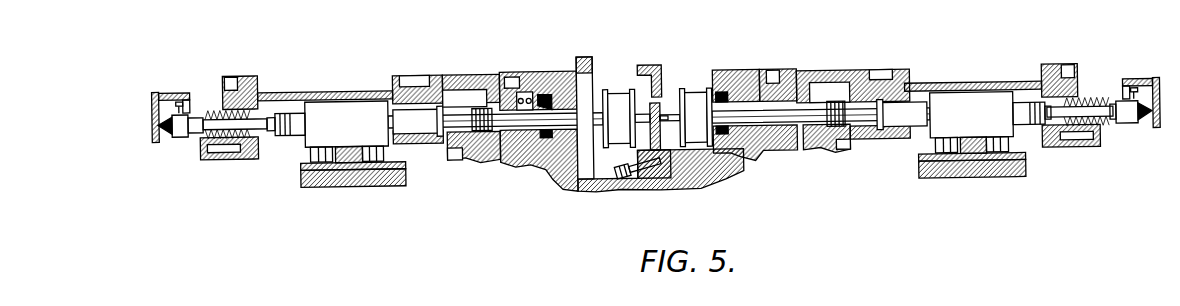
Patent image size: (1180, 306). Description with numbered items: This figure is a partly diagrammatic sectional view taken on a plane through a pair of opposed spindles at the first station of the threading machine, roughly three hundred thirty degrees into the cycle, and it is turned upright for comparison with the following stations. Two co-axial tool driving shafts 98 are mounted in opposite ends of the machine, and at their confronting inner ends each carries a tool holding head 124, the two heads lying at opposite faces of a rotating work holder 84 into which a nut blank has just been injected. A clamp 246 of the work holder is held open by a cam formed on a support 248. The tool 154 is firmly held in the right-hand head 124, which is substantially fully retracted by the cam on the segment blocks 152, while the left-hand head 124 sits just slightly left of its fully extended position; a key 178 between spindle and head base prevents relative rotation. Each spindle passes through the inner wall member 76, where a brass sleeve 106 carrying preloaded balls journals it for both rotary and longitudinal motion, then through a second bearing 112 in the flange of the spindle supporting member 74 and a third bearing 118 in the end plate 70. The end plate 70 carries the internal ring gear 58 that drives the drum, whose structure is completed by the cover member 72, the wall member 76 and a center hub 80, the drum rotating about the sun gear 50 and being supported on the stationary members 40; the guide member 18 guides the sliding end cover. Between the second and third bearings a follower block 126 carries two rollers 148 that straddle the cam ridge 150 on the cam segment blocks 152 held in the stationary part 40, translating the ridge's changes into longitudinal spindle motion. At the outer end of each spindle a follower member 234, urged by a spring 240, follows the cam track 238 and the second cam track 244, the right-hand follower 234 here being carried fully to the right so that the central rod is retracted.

The guide member 18 is at (556, 72).
The stationary member 40 is at (367, 184).
The sun gear 50 is at (479, 152).
The internal ring gear 58 is at (481, 105).
The end plate 70 is at (1060, 71).
The cover member 72 is at (282, 90).
The spindle supporting member 74 is at (436, 74).
The inner wall member 76 is at (501, 74).
The center hub 80 is at (700, 187).
The work holder 84 is at (636, 178).
The tool driving shaft 98 is at (540, 90).
The sleeve 106 is at (525, 93).
The second bearing 112 is at (393, 90).
The third bearing 118 is at (258, 87).
The tool holding head 124 is at (614, 100).
The follower block 126 is at (334, 112).
The rollers 148 is at (308, 150).
The cam ridge 150 is at (403, 173).
The cam segment blocks 152 is at (337, 182).
The tool 154 is at (669, 150).
The key 178 is at (586, 56).
The follower member 234 is at (181, 122).
The cam track 238 is at (160, 133).
The spring 240 is at (196, 110).
The second cam track 244 is at (167, 79).
The clamp 246 is at (659, 115).
The support 248 is at (653, 72).